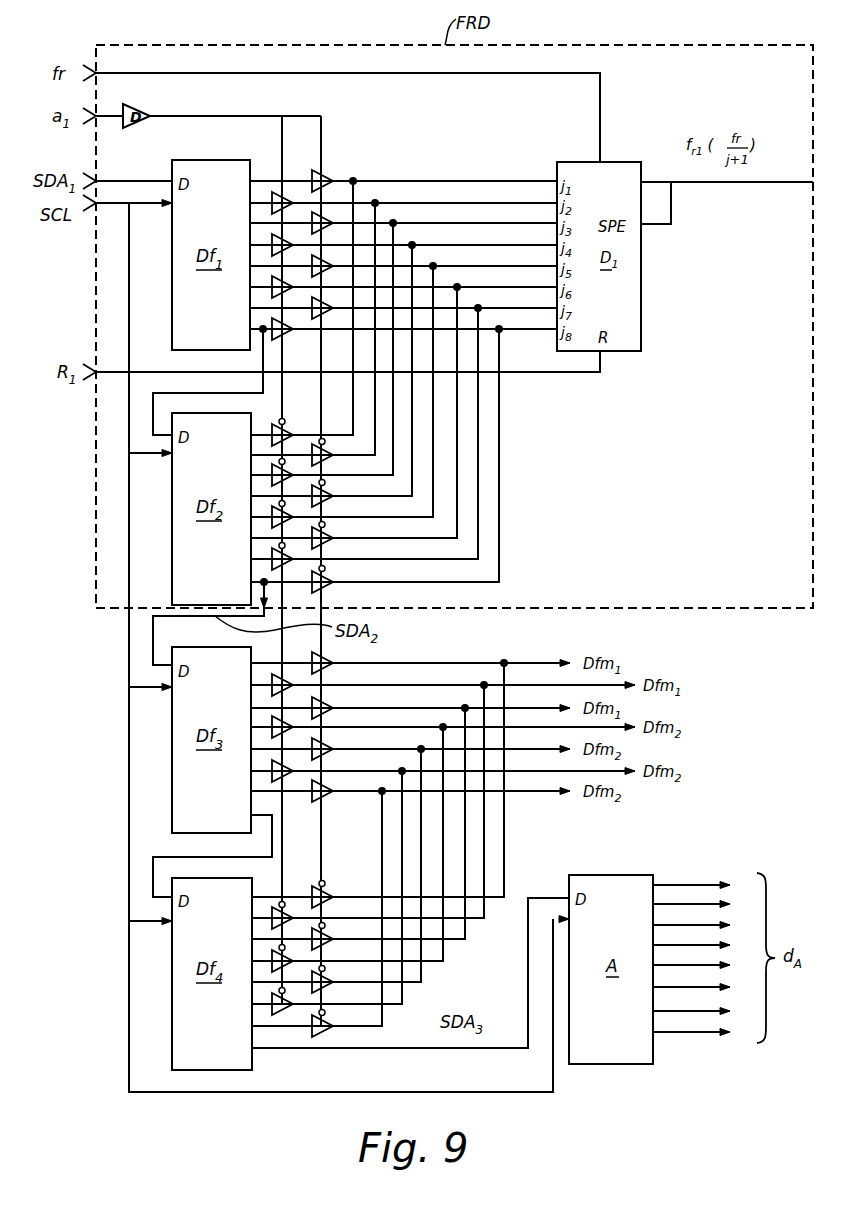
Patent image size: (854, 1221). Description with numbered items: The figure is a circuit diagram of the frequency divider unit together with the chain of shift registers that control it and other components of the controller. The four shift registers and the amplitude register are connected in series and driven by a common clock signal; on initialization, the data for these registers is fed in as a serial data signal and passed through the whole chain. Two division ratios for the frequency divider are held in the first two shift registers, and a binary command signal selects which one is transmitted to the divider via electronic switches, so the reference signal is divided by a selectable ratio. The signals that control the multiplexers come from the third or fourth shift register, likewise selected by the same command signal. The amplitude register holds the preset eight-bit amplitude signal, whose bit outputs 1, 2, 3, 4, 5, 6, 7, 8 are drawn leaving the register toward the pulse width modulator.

The output 1 of decoder A (dA) 1 is at (700, 885).
The output 2 of decoder A (dA) 2 is at (700, 906).
The output 3 of decoder A (dA) 3 is at (700, 926).
The output 4 of decoder A (dA) 4 is at (700, 946).
The output 5 of decoder A (dA) 5 is at (700, 966).
The output 6 of decoder A (dA) 6 is at (700, 987).
The output 7 of decoder A (dA) 7 is at (700, 1011).
The output 8 of decoder A (dA) 8 is at (700, 1033).